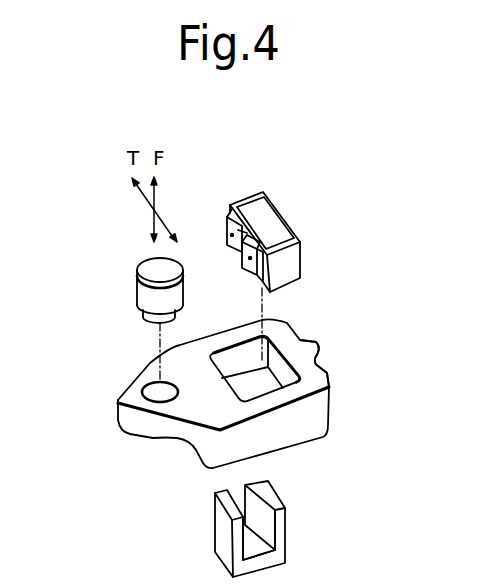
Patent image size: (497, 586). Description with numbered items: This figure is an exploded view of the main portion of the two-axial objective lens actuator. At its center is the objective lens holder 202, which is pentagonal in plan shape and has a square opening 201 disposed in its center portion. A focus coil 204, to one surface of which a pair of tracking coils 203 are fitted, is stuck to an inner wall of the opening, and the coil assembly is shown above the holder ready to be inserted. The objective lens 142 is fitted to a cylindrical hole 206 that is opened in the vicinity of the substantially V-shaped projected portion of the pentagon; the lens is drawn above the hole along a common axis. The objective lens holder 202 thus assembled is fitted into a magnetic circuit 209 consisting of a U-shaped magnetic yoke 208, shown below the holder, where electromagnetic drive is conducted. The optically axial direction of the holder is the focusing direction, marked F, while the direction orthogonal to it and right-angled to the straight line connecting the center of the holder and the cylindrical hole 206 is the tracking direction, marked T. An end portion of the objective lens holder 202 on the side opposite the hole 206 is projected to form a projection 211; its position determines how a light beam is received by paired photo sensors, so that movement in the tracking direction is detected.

The objective lens 142 is at (137, 288).
The square opening 201 is at (278, 348).
The objective lens holder 202 is at (313, 388).
The tracking coils 203 is at (227, 215).
The focus coil 204 is at (285, 212).
The cylindrical hole 206 is at (160, 406).
The magnetic yoke 208 is at (285, 542).
The magnetic circuit 209 is at (270, 493).
The projection 211 is at (317, 343).